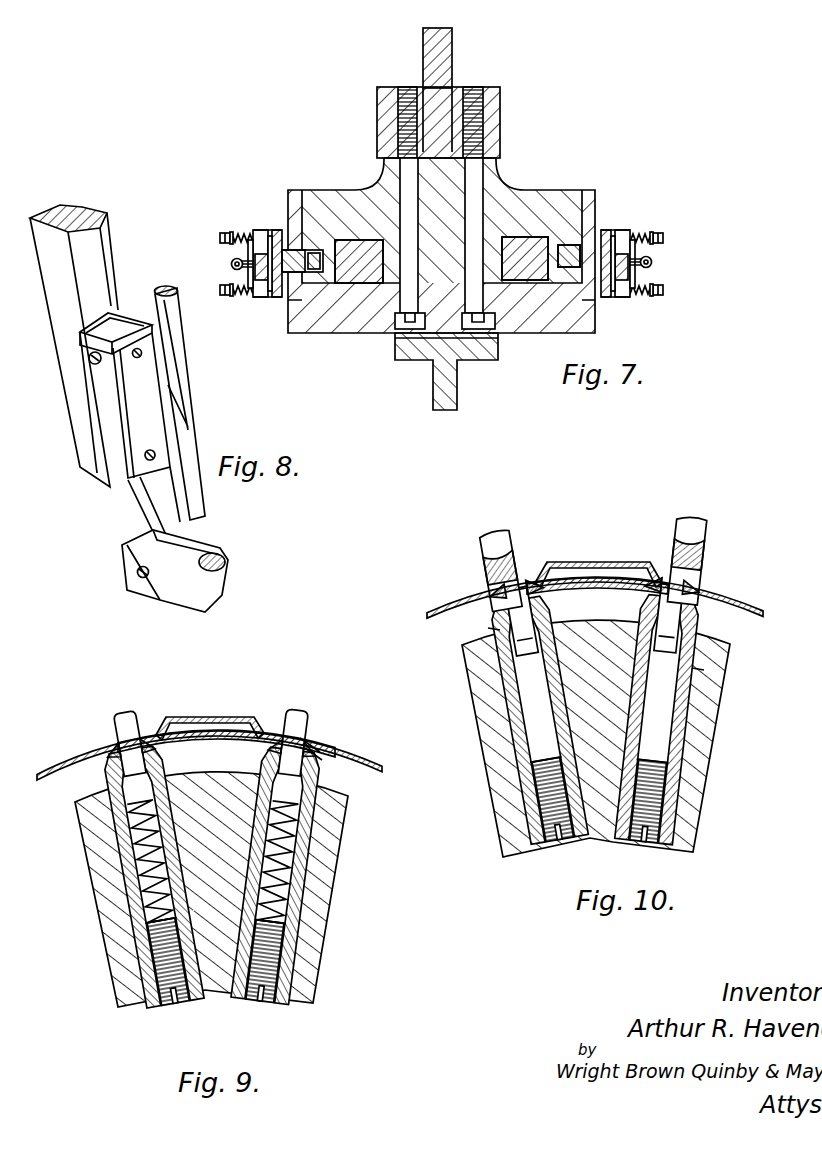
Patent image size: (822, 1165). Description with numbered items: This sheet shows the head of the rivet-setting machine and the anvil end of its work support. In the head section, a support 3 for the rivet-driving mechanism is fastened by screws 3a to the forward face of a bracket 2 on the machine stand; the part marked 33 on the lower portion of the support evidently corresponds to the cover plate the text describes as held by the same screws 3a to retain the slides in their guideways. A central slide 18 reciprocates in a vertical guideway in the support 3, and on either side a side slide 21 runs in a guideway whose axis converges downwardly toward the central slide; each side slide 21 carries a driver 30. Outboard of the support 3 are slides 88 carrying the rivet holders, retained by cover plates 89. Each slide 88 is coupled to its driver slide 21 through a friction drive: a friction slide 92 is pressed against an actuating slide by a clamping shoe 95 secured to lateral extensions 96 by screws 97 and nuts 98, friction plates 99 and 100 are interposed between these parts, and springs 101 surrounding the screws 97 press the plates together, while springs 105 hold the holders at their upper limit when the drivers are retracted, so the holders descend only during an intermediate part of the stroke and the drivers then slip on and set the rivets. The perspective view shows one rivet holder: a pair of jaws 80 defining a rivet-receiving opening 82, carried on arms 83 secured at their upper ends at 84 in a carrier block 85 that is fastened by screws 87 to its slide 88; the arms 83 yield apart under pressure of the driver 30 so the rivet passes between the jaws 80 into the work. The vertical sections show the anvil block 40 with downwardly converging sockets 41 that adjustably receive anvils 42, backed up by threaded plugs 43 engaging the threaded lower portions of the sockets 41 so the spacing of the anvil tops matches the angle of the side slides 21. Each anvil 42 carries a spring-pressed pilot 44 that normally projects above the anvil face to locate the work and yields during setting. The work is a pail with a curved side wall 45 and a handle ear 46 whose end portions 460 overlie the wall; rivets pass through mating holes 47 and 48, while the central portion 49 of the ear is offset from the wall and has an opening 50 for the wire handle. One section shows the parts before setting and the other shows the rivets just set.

In FIG. 7, the bracket 2 is at (446, 67).
In FIG. 7, the support 3 is at (505, 205).
In FIG. 7, the screws 3a is at (405, 330).
In FIG. 7, the central slide 18 is at (458, 357).
In FIG. 7, the side slides 21 is at (366, 283).
In FIG. 8, the drivers 30 is at (183, 383).
In FIG. 10, the drivers 30 is at (500, 545).
In FIG. 7, the body flange 33 is at (342, 333).
In FIG. 9, the anvil block 40 is at (318, 944).
In FIG. 10, the anvil block 40 is at (500, 826).
In FIG. 9, the sockets 41 is at (110, 866).
In FIG. 10, the sockets 41 is at (506, 730).
In FIG. 9, the anvils 42 is at (102, 793).
In FIG. 10, the anvils 42 is at (488, 628).
In FIG. 9, the threaded plugs 43 is at (163, 1002).
In FIG. 10, the threaded plugs 43 is at (662, 806).
In FIG. 9, the spring pressed pilot 44 is at (126, 730).
In FIG. 10, the spring pressed pilot 44 is at (515, 612).
In FIG. 9, the curved side wall 45 is at (380, 762).
In FIG. 10, the curved side wall 45 is at (452, 610).
In FIG. 9, the ear 46 is at (252, 737).
In FIG. 10, the ear 46 is at (565, 580).
In FIG. 9, the holes 47 is at (312, 742).
In FIG. 9, the holes 48 is at (318, 750).
In FIG. 9, the central portion of the ear 49 is at (174, 730).
In FIG. 9, the opening 50 is at (217, 717).
In FIG. 10, the opening 50 is at (606, 562).
In FIG. 8, the jaws 80 is at (208, 546).
In FIG. 8, the rivet-receiving opening 82 is at (222, 560).
In FIG. 8, the arms 83 is at (133, 318).
In FIG. 8, the arm securing point 84 is at (88, 357).
In FIG. 8, the carrier block 85 is at (108, 320).
In FIG. 8, the screws 87 is at (138, 360).
In FIG. 7, the slides 88 is at (318, 250).
In FIG. 8, the slides 88 is at (70, 205).
In FIG. 7, the cover plates 89 is at (300, 190).
In FIG. 7, the friction slide 92 is at (265, 232).
In FIG. 7, the clamping shoe 95 is at (251, 240).
In FIG. 7, the lateral extensions 96 is at (279, 228).
In FIG. 7, the screws 97 is at (222, 239).
In FIG. 7, the nuts 98 is at (230, 236).
In FIG. 7, the friction plate 99 is at (259, 298).
In FIG. 7, the friction plate 100 is at (262, 298).
In FIG. 7, the springs 101 is at (240, 232).
In FIG. 7, the springs 105 is at (232, 266).
In FIG. 9, the end portions of the ear 460 is at (108, 722).
In FIG. 10, the end portions of the ear 460 is at (594, 588).